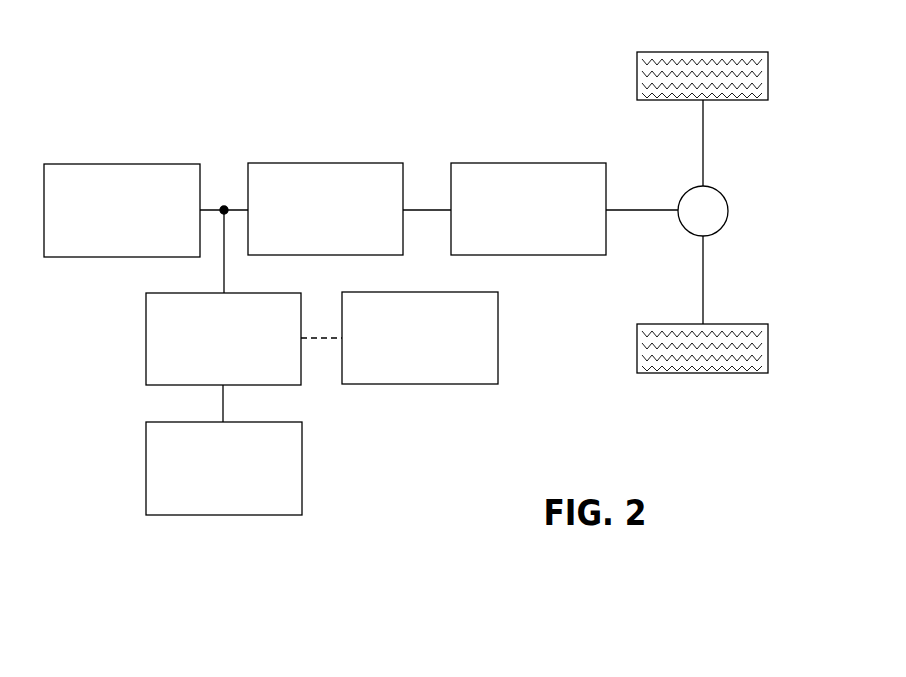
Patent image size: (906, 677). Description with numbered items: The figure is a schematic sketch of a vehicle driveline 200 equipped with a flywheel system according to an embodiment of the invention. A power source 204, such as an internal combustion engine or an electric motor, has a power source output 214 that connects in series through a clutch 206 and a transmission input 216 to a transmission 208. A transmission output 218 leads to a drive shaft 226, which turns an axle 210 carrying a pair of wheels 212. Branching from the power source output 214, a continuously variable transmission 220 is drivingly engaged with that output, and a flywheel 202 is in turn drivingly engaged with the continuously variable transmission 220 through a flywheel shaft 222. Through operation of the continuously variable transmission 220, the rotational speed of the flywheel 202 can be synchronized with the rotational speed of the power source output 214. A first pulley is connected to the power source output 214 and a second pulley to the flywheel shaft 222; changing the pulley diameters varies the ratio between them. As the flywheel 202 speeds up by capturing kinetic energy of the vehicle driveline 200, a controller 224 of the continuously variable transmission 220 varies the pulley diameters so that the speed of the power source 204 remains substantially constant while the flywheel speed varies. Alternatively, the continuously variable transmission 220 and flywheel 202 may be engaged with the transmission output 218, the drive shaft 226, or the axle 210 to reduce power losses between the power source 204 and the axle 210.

The vehicle driveline 200 is at (118, 62).
The flywheel 202 is at (302, 465).
The power source 204 is at (120, 163).
The clutch 206 is at (322, 163).
The transmission 208 is at (527, 163).
The axle 210 is at (704, 290).
The wheels 212 is at (702, 52).
The power source output 214 is at (212, 208).
The transmission input 216 is at (426, 212).
The transmission output 218 is at (620, 215).
The continuously variable transmission 220 is at (146, 339).
The flywheel shaft 222 is at (223, 402).
The controller 224 is at (498, 338).
The drive shaft 226 is at (650, 210).